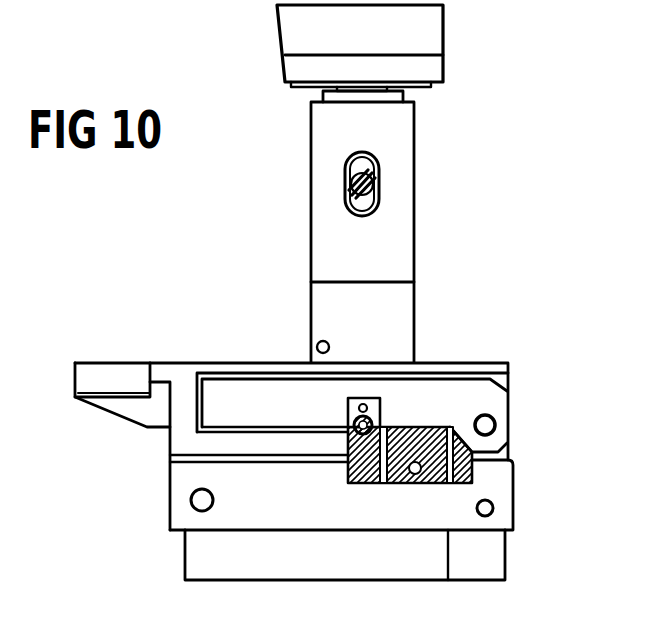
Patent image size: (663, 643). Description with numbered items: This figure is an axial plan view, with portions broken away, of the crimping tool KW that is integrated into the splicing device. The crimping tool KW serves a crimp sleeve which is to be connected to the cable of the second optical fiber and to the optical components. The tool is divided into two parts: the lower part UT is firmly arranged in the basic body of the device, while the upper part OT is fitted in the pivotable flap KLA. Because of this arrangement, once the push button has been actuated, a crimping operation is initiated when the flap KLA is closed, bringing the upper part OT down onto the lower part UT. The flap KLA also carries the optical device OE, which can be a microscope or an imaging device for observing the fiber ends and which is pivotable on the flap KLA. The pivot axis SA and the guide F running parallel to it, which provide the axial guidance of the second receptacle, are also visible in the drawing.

The optical device OE is at (414, 188).
The crimping tool KW is at (433, 392).
The flap KLA is at (497, 405).
The upper part OT is at (350, 415).
The lower part UT is at (350, 445).
The pivot axis SA is at (190, 500).
The guide F is at (493, 508).